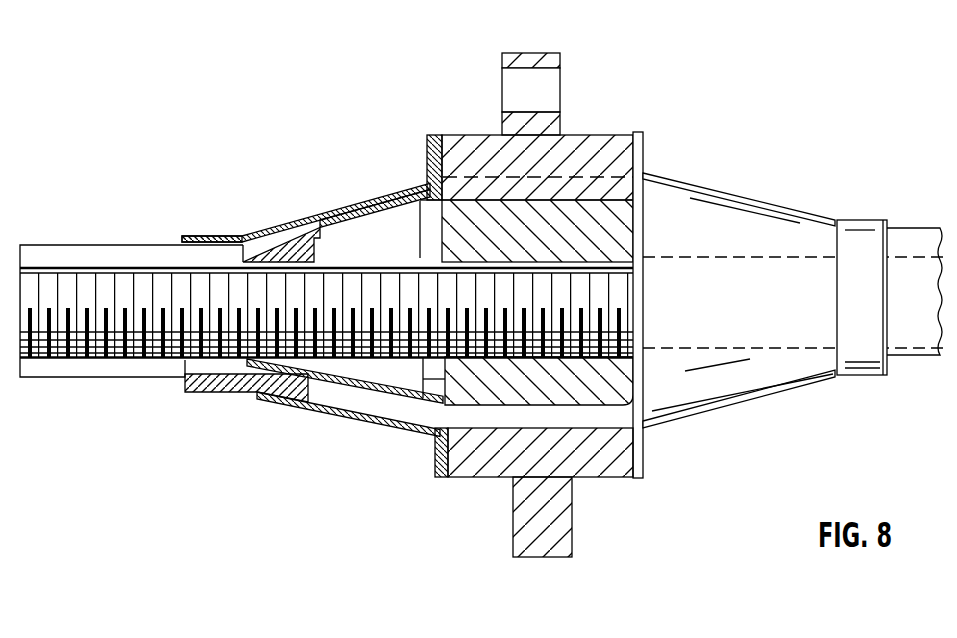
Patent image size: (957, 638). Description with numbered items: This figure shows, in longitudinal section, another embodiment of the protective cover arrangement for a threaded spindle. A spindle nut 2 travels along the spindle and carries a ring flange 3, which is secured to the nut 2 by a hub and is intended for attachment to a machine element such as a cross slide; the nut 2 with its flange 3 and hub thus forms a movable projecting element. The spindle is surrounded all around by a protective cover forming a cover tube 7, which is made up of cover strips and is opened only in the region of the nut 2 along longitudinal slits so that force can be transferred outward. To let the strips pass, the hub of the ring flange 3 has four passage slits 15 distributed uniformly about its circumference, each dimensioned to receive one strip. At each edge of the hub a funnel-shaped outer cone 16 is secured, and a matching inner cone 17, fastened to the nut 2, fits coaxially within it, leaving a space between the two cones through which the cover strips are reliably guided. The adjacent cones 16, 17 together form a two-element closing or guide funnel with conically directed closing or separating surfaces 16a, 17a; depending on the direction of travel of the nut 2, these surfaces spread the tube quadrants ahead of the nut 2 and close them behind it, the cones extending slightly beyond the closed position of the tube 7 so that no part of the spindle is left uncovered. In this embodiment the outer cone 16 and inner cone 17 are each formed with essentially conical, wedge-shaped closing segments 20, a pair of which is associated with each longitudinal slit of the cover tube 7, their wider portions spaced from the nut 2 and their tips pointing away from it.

The spindle nut 2 is at (618, 225).
The ring flange 3 is at (541, 58).
The cover tube 7 is at (925, 240).
The passage slits 15 is at (477, 432).
The outer cone 16 is at (297, 212).
The closing or separating surface of outer cone 16a is at (250, 236).
The inner cone 17 is at (366, 218).
The closing or separating surface of inner cone 17a is at (345, 410).
The closing segment 20 is at (262, 392).